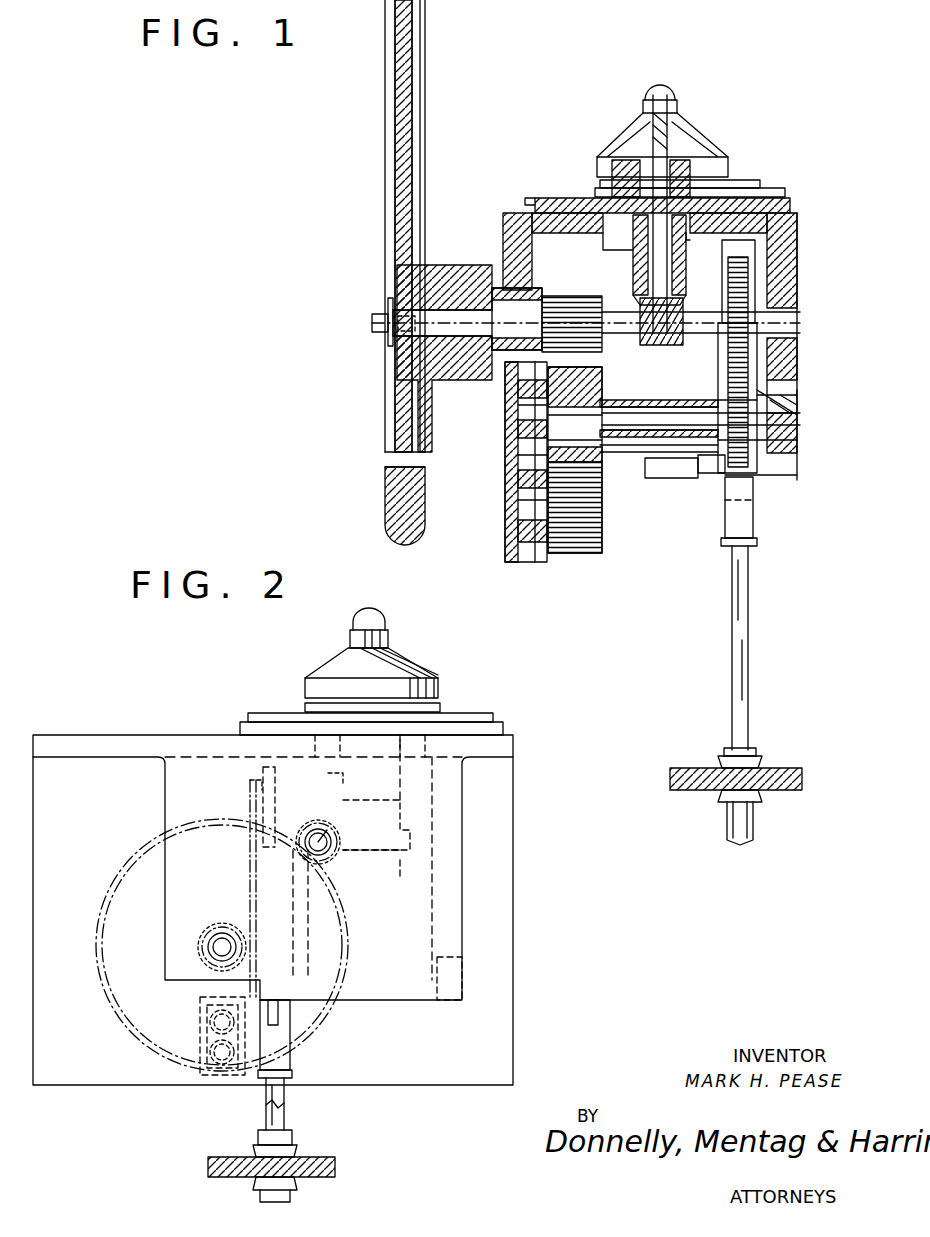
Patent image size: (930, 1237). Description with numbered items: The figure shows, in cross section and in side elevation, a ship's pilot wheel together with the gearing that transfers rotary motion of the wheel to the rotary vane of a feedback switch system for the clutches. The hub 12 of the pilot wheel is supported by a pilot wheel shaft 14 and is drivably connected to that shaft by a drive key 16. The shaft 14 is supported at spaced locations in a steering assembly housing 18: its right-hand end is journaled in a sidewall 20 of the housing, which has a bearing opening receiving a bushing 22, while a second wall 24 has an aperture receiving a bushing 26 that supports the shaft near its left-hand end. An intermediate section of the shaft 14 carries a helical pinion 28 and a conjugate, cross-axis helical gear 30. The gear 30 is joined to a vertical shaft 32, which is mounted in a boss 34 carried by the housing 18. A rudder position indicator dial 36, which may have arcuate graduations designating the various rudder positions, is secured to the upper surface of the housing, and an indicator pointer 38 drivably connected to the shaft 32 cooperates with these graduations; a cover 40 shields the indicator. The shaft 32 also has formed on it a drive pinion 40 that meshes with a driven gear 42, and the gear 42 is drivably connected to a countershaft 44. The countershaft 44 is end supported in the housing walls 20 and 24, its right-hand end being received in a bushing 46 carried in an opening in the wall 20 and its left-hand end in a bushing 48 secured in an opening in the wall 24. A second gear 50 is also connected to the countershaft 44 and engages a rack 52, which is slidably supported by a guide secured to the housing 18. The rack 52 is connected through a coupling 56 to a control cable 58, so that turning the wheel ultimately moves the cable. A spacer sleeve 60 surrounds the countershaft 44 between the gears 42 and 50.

In FIG. 1, the hub 12 is at (458, 372).
In FIG. 1, the pilot wheel shaft 14 is at (415, 333).
In FIG. 2, the pilot wheel shaft 14 is at (335, 815).
In FIG. 1, the drive key 16 is at (380, 305).
In FIG. 1, the steering assembly housing 18 is at (525, 208).
In FIG. 1, the sidewall 20 is at (790, 283).
In FIG. 2, the sidewall 20 is at (440, 935).
In FIG. 1, the bushing 22 is at (795, 352).
In FIG. 1, the second wall 24 is at (504, 236).
In FIG. 1, the bushing 26 is at (517, 319).
In FIG. 1, the helical pinion 28 is at (665, 340).
In FIG. 2, the helical pinion 28 is at (330, 855).
In FIG. 2, the helical gear 30 is at (395, 889).
In FIG. 1, the vertical shaft 32 is at (680, 150).
In FIG. 1, the boss 34 is at (633, 250).
In FIG. 2, the boss 34 is at (320, 777).
In FIG. 1, the rudder position indicator dial 36 is at (787, 195).
In FIG. 1, the indicator pointer 38 is at (755, 183).
In FIG. 1, the cover / drive pinion 40 is at (566, 286).
In FIG. 2, the cover / drive pinion 40 is at (410, 665).
In FIG. 1, the driven gear 42 is at (602, 543).
In FIG. 2, the driven gear 42 is at (128, 1040).
In FIG. 1, the countershaft 44 is at (632, 412).
In FIG. 1, the bushing 46 is at (792, 400).
In FIG. 1, the bushing 48 is at (505, 468).
In FIG. 1, the second gear 50 is at (718, 422).
In FIG. 2, the second gear 50 is at (202, 985).
In FIG. 1, the rack 52 is at (795, 430).
In FIG. 2, the rack 52 is at (248, 900).
In FIG. 1, the coupling 56 is at (745, 520).
In FIG. 2, the coupling 56 is at (285, 1033).
In FIG. 1, the control cable 58 is at (742, 662).
In FIG. 2, the control cable 58 is at (285, 1098).
In FIG. 1, the spacer sleeve 60 is at (630, 460).